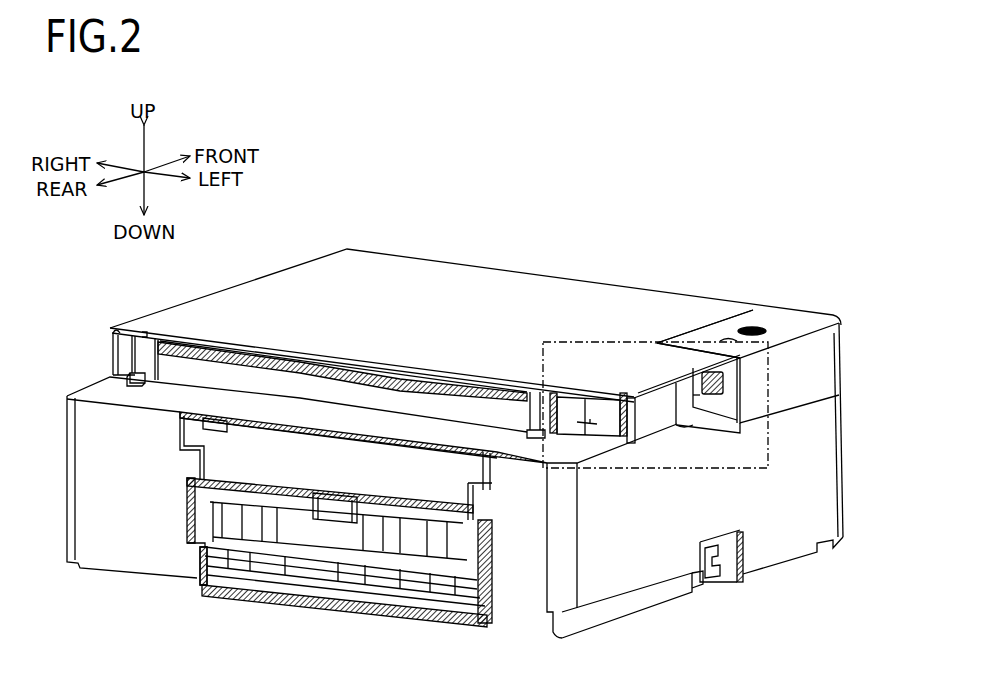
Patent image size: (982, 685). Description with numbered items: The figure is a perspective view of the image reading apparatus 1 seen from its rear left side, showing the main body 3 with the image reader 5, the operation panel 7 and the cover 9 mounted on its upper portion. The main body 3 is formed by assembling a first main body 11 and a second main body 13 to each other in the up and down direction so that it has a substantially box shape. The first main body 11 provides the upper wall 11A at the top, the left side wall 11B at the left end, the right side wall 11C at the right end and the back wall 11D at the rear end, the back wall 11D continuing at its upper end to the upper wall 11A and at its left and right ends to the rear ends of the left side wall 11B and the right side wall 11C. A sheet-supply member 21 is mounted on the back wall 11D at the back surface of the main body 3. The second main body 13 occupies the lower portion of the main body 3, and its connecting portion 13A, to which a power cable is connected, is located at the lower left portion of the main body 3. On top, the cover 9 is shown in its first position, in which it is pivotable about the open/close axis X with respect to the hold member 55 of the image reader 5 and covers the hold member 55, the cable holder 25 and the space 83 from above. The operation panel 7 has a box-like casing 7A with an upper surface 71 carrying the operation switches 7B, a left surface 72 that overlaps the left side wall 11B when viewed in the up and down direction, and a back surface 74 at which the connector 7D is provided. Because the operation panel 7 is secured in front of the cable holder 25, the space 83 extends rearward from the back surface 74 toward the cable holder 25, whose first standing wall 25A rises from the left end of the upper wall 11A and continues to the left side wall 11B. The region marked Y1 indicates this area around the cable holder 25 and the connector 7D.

The image reading apparatus 1 is at (559, 198).
The main body 3 is at (425, 527).
The image reader 5 is at (275, 372).
The operation panel 7 is at (766, 382).
The casing 7A is at (800, 394).
The operation switches 7B is at (749, 328).
The connector 7D is at (696, 372).
The cover 9 is at (400, 260).
The first main body 11 is at (350, 527).
The upper wall 11A is at (165, 395).
The left side wall 11B is at (611, 578).
The right side wall 11C is at (65, 426).
The back wall 11D is at (160, 540).
The second main body 13 is at (744, 586).
The connecting portion 13A is at (714, 576).
The sheet-supply member 21 is at (358, 452).
The cable holder 25 is at (627, 400).
The first standing wall 25A is at (655, 425).
The hold member 55 is at (450, 405).
The upper surface 71 is at (748, 296).
The left surface 72 is at (823, 358).
The back surface 74 is at (728, 398).
The space 83 is at (694, 408).
The open/close axis X is at (108, 357).
The region Y1 is at (552, 342).